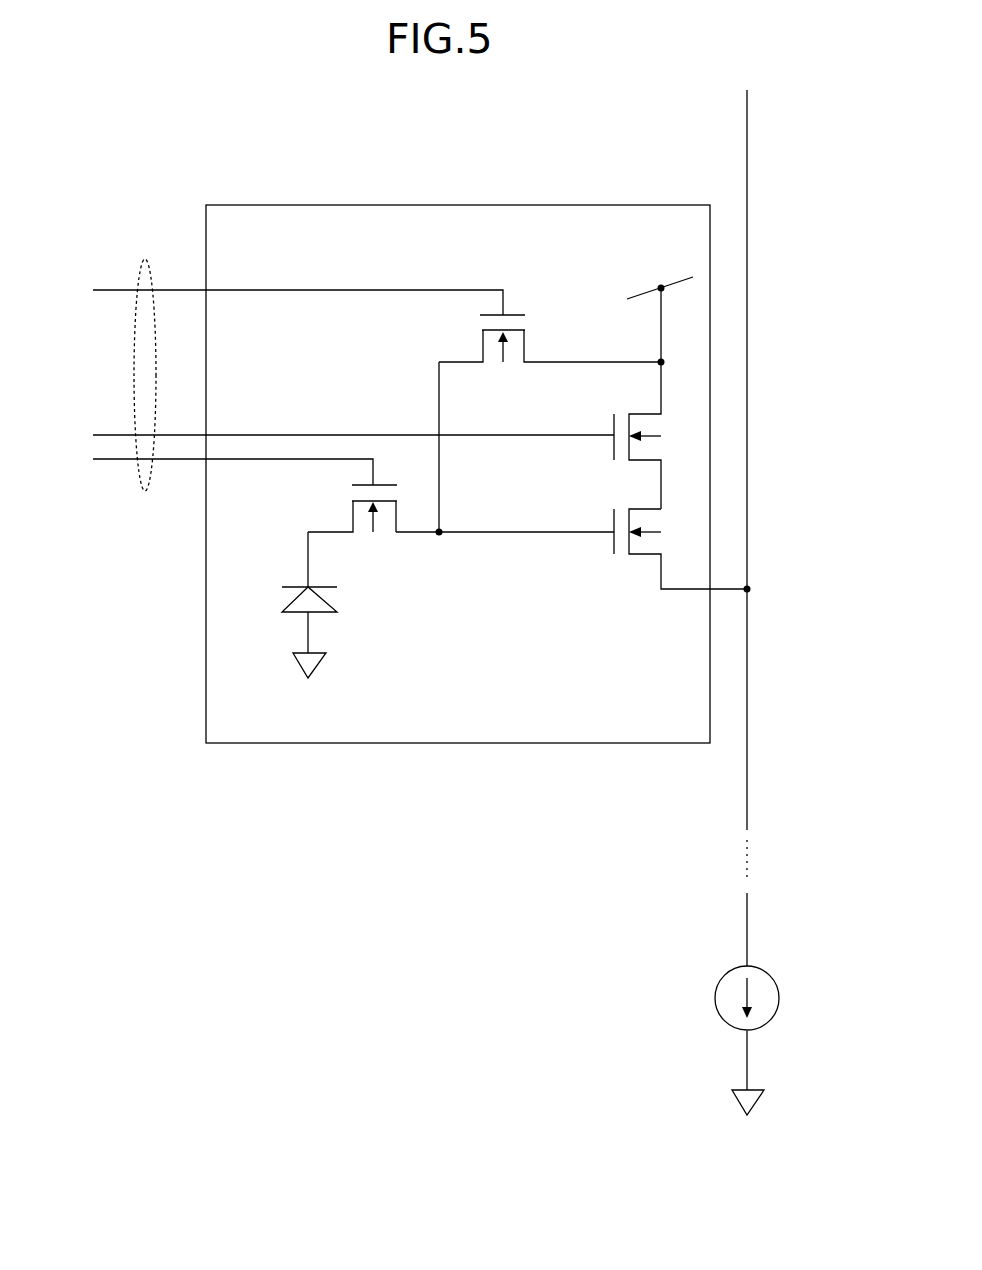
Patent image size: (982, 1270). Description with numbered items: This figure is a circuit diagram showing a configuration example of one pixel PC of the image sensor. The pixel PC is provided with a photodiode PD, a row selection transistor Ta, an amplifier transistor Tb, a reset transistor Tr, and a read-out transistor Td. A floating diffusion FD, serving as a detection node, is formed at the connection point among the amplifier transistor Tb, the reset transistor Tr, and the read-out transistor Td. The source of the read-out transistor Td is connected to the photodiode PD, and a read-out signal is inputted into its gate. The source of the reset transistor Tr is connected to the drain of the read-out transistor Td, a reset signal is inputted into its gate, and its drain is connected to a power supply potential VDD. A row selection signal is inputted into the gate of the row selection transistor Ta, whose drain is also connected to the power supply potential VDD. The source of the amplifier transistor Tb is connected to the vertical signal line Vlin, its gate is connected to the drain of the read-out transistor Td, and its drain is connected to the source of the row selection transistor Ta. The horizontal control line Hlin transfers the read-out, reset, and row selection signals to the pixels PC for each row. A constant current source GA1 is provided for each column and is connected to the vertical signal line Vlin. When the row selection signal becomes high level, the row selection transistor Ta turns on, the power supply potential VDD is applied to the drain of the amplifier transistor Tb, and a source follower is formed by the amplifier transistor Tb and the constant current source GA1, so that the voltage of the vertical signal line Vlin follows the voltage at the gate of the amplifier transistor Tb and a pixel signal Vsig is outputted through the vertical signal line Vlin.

The pixel PC is at (270, 204).
The horizontal control line Hlin is at (146, 361).
The reset transistor Tr is at (481, 350).
The row selection transistor Ta is at (611, 452).
The amplifier transistor Tb is at (611, 546).
The read-out transistor Td is at (350, 519).
The floating diffusion FD is at (441, 538).
The photodiode PD is at (340, 601).
The power supply potential VDD is at (660, 310).
The vertical signal line Vlin is at (748, 316).
The pixel signal Vsig is at (774, 590).
The constant current source GA1 is at (780, 998).